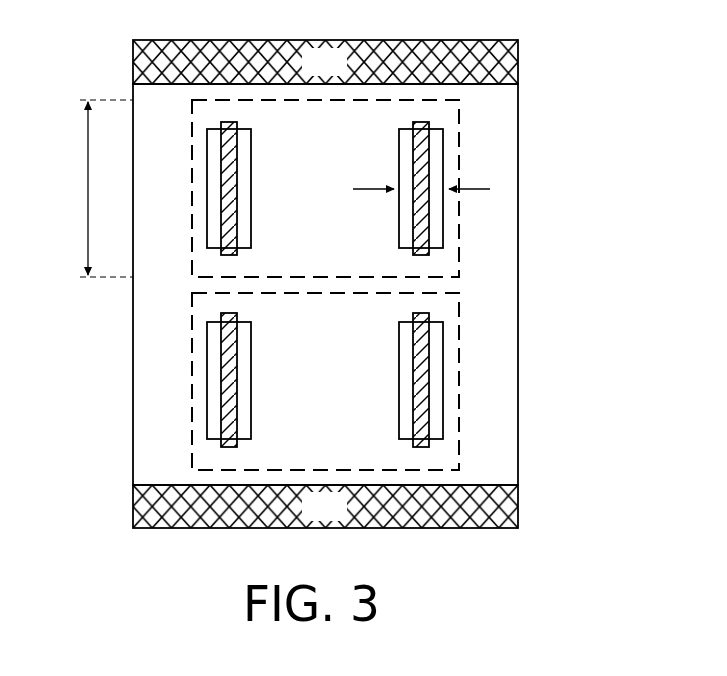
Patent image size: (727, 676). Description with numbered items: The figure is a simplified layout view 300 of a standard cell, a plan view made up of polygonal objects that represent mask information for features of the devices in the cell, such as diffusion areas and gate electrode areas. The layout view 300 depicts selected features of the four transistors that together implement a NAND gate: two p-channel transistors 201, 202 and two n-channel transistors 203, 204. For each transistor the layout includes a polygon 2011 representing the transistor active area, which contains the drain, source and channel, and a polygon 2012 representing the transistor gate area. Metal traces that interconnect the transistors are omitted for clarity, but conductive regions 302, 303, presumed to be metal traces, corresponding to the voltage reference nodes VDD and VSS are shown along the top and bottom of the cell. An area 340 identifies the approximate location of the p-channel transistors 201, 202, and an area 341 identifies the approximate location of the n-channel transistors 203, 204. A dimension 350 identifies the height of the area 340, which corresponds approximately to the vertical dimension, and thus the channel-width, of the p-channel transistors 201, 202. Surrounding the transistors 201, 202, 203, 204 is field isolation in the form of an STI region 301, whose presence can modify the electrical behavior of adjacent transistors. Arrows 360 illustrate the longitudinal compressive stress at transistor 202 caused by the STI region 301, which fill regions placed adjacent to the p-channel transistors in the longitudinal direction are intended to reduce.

The layout view 300 is at (152, 588).
The VDD power rail 302 is at (518, 52).
The VSS power rail 303 is at (518, 494).
The STI region 301 is at (182, 188).
The area 340 is at (192, 141).
The area 341 is at (192, 336).
The dimension 350 is at (88, 205).
The arrows 360 is at (363, 188).
The transistor 201 is at (265, 191).
The transistor 202 is at (443, 146).
The transistor 203 is at (251, 343).
The transistor 204 is at (443, 338).
The polygon 2011 is at (252, 247).
The polygon 2012 is at (238, 251).